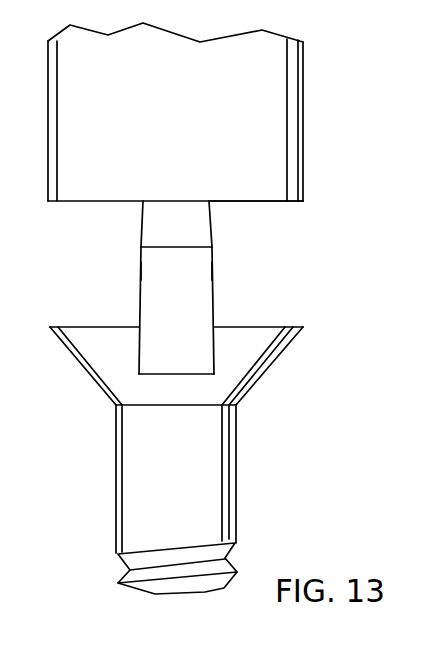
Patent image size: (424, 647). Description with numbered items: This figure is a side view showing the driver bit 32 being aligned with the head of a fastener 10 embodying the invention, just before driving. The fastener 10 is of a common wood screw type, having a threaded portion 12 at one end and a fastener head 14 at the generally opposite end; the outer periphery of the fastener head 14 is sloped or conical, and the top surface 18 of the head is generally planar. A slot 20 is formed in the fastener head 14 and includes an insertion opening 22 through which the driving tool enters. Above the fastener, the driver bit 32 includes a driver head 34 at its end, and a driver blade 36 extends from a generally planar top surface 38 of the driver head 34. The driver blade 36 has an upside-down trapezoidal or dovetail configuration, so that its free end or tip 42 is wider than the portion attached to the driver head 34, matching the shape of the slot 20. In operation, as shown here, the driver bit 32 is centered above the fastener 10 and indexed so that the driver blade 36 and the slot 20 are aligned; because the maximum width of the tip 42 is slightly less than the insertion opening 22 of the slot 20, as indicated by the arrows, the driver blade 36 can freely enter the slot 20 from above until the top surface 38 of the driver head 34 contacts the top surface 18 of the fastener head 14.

The fastener 10 is at (85, 467).
The threaded portion 12 is at (115, 590).
The fastener head 14 is at (270, 375).
The top surface 18 is at (191, 310).
The slot 20 is at (222, 430).
The insertion opening 22 is at (264, 307).
The driver bit 32 is at (313, 127).
The driver head 34 is at (327, 120).
The driver blade 36 is at (214, 224).
The top surface 38 is at (274, 216).
The free end or tip 42 is at (262, 270).